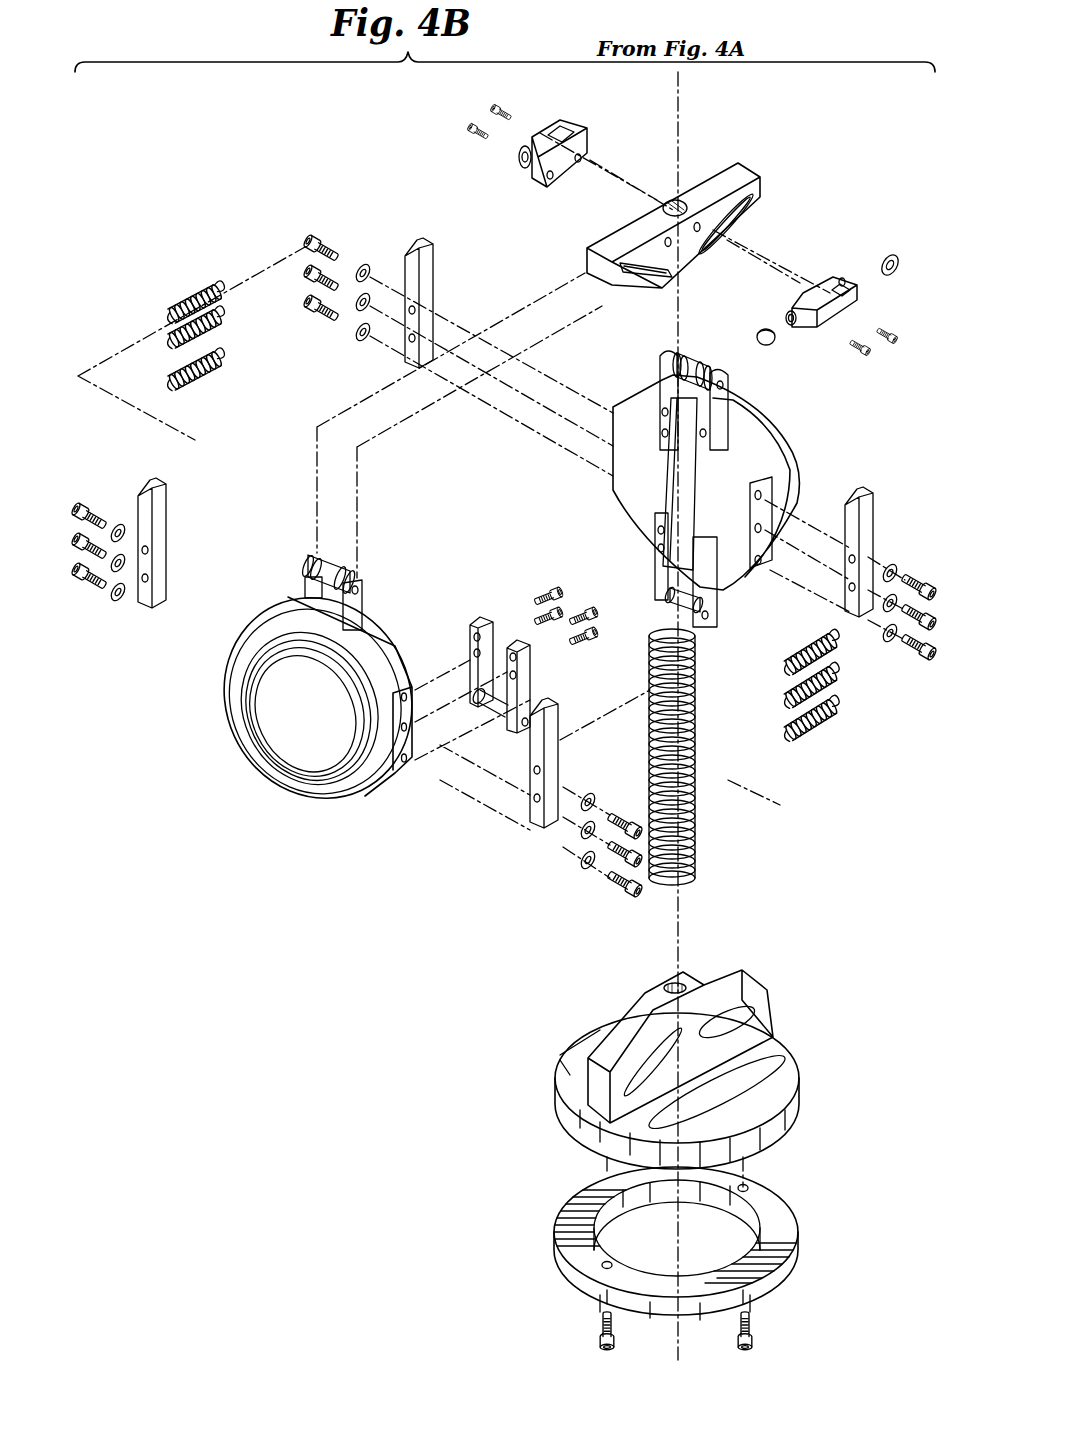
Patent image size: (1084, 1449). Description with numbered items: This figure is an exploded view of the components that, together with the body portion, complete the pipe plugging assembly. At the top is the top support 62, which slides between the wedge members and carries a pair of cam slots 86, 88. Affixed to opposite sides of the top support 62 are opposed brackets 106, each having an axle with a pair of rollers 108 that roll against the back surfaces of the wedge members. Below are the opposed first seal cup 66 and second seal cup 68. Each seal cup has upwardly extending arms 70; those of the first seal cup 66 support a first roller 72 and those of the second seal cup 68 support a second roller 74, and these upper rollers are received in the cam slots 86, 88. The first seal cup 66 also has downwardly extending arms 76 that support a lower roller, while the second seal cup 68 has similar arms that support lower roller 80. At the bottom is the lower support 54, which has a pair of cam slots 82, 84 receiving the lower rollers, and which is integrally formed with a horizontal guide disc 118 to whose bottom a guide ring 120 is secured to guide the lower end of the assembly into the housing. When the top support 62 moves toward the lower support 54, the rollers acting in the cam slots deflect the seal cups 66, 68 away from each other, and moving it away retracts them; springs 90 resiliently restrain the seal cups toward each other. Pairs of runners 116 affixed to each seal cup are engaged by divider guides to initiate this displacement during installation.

The lower support 54 is at (780, 1000).
The top support 62 is at (715, 182).
The first seal cup 66 is at (368, 793).
The second seal cup 68 is at (762, 448).
The upwardly extending arms 70 is at (660, 378).
The first roller 72 is at (340, 562).
The second roller 74 is at (697, 357).
The downwardly extending arms 76 is at (660, 578).
The lower roller 80 is at (680, 606).
The cam slot 82 is at (647, 1073).
The cam slot 84 is at (742, 1023).
The cam slot 86 is at (637, 275).
The cam slot 88 is at (740, 228).
The springs 90 is at (698, 737).
The brackets 106 is at (573, 122).
The rollers 108 is at (517, 166).
The runners 116 is at (432, 262).
The guide disc 118 is at (800, 1073).
The guide ring 120 is at (790, 1225).